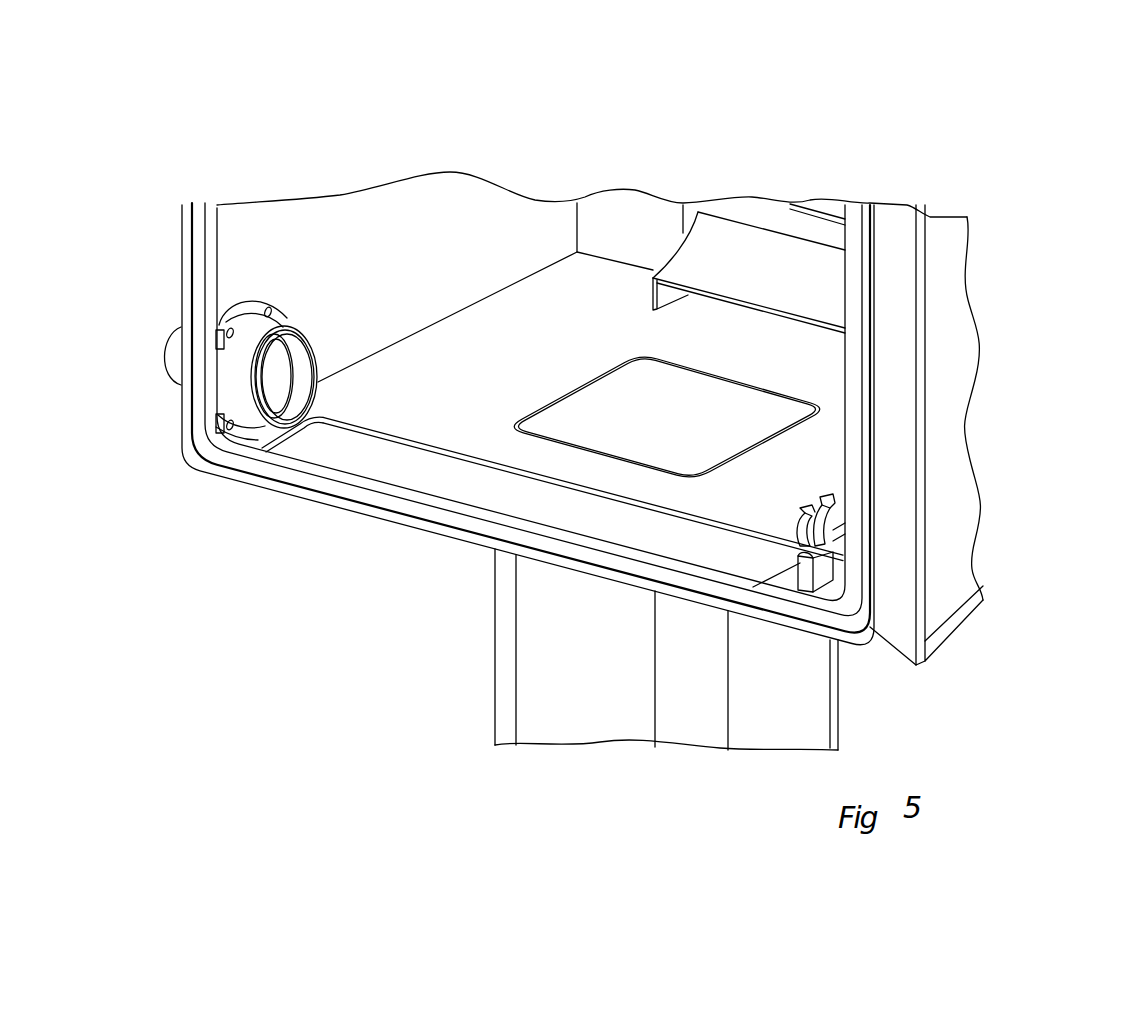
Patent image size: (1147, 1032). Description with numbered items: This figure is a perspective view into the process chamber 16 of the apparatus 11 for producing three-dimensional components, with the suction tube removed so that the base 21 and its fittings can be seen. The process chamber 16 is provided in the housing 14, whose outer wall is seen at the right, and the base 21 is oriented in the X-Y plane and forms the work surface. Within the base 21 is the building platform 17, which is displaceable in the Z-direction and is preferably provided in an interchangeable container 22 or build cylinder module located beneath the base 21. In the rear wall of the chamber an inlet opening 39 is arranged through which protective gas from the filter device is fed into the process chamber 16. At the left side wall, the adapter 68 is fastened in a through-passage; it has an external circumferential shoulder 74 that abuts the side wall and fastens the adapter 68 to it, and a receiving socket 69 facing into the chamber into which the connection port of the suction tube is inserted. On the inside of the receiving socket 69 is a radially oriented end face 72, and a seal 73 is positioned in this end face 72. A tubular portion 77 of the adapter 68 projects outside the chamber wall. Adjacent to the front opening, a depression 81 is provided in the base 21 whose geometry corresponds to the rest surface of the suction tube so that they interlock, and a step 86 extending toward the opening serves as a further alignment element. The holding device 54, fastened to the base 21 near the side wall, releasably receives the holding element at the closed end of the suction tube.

The apparatus 11 is at (1022, 212).
The housing 14 is at (963, 327).
The process chamber 16 is at (375, 246).
The building platform 17 is at (700, 418).
The base 21 is at (810, 476).
The interchangeable container 22 is at (573, 648).
The inlet opening 39 is at (755, 278).
The holding device 54 is at (820, 560).
The adapter 68 is at (227, 370).
The receiving socket 69 is at (237, 396).
The end face 72 is at (293, 405).
The seal 73 is at (272, 418).
The external circumferential shoulder 74 is at (235, 315).
The pipe stub 77 is at (163, 355).
The depression 81 is at (418, 468).
The step 86 is at (340, 478).